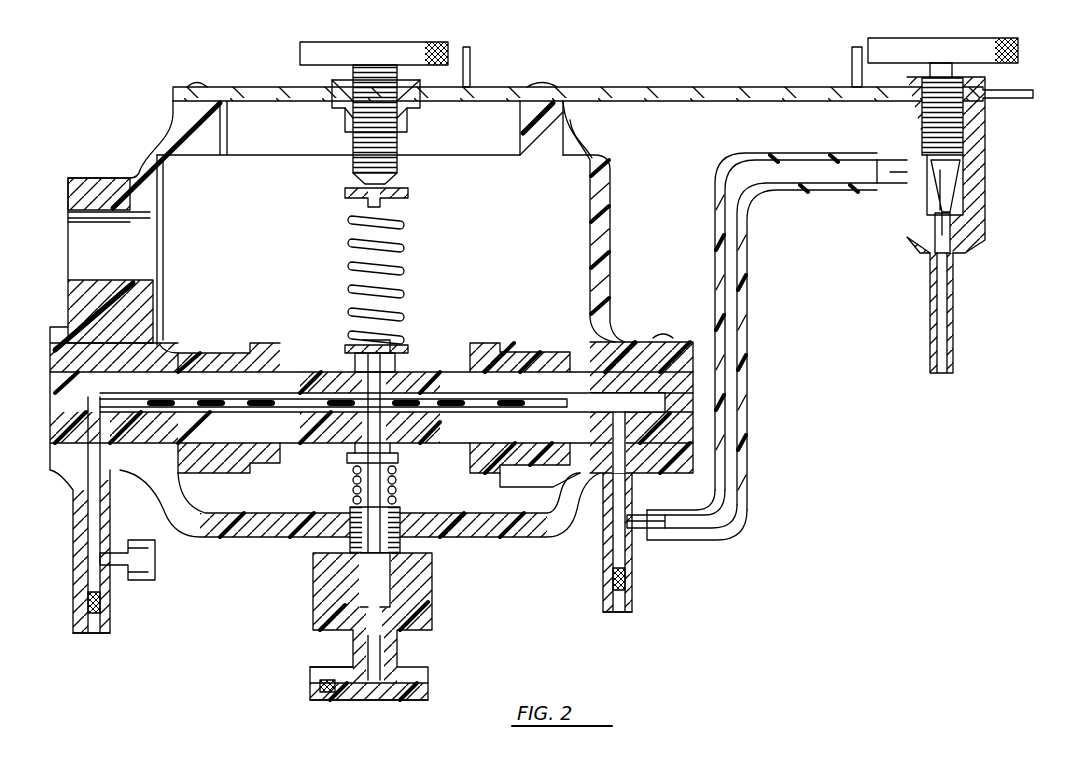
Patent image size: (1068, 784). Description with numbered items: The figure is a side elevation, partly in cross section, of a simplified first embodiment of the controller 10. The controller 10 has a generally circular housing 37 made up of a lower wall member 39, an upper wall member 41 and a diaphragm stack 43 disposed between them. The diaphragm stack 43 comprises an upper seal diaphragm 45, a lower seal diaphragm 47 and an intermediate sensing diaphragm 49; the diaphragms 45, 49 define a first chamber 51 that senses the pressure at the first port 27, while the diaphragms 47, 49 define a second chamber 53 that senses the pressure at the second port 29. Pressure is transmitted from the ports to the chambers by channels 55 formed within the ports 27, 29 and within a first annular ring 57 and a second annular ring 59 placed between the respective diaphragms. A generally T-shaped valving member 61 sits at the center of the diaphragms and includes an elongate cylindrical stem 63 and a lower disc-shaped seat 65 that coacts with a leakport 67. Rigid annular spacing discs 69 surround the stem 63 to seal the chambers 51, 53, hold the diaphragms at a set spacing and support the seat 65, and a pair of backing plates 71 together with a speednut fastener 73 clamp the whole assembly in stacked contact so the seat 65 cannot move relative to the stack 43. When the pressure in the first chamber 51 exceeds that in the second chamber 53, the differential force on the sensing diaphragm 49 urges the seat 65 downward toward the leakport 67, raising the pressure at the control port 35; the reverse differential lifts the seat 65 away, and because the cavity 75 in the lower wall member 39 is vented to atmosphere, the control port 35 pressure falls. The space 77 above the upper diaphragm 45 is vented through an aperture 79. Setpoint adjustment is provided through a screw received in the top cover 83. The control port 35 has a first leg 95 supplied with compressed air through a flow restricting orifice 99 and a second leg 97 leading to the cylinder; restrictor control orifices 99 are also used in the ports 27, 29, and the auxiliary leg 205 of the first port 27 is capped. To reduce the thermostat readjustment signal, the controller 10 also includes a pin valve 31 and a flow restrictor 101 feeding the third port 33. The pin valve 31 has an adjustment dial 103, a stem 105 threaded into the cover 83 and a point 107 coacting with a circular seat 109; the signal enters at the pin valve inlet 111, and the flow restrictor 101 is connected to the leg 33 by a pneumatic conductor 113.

The controller 10 is at (532, 641).
The first port 27 is at (98, 638).
The second port 29 is at (618, 616).
The pin valve 31 is at (905, 203).
The third port 33 is at (656, 540).
The control port 35 is at (406, 702).
The housing 37 is at (622, 214).
The lower wall member 39 is at (516, 538).
The upper wall member 41 is at (610, 158).
The diaphragm stack 43 is at (454, 360).
The upper seal diaphragm 45 is at (304, 372).
The lower seal diaphragm 47 is at (420, 450).
The intermediate sensing diaphragm 49 is at (240, 428).
The first chamber 51 is at (453, 396).
The second chamber 53 is at (453, 437).
The channels 55 is at (73, 500).
The first annular ring 57 is at (610, 364).
The second annular ring 59 is at (542, 438).
The valving member 61 is at (406, 474).
The stem 63 is at (398, 346).
The seat 65 is at (350, 464).
The leakport 67 is at (400, 494).
The spacing discs 69 is at (330, 392).
The backing plates 71 is at (342, 353).
The speednut fastener 73 is at (392, 347).
The cavity 75 is at (252, 510).
The space 77 is at (262, 240).
The aperture 79 is at (150, 220).
The top cover 83 is at (638, 87).
The first leg 95 is at (306, 688).
The second leg 97 is at (428, 682).
The restrictor control orifice 99 is at (102, 606).
The flow restrictor 101 is at (890, 166).
The adjustment dial 103 is at (868, 39).
The stem 105 is at (954, 67).
The point 107 is at (951, 196).
The circular seat 109 is at (951, 220).
The pin valve inlet 111 is at (944, 374).
The pneumatic conductor 113 is at (746, 272).
The auxiliary leg 205 is at (154, 578).